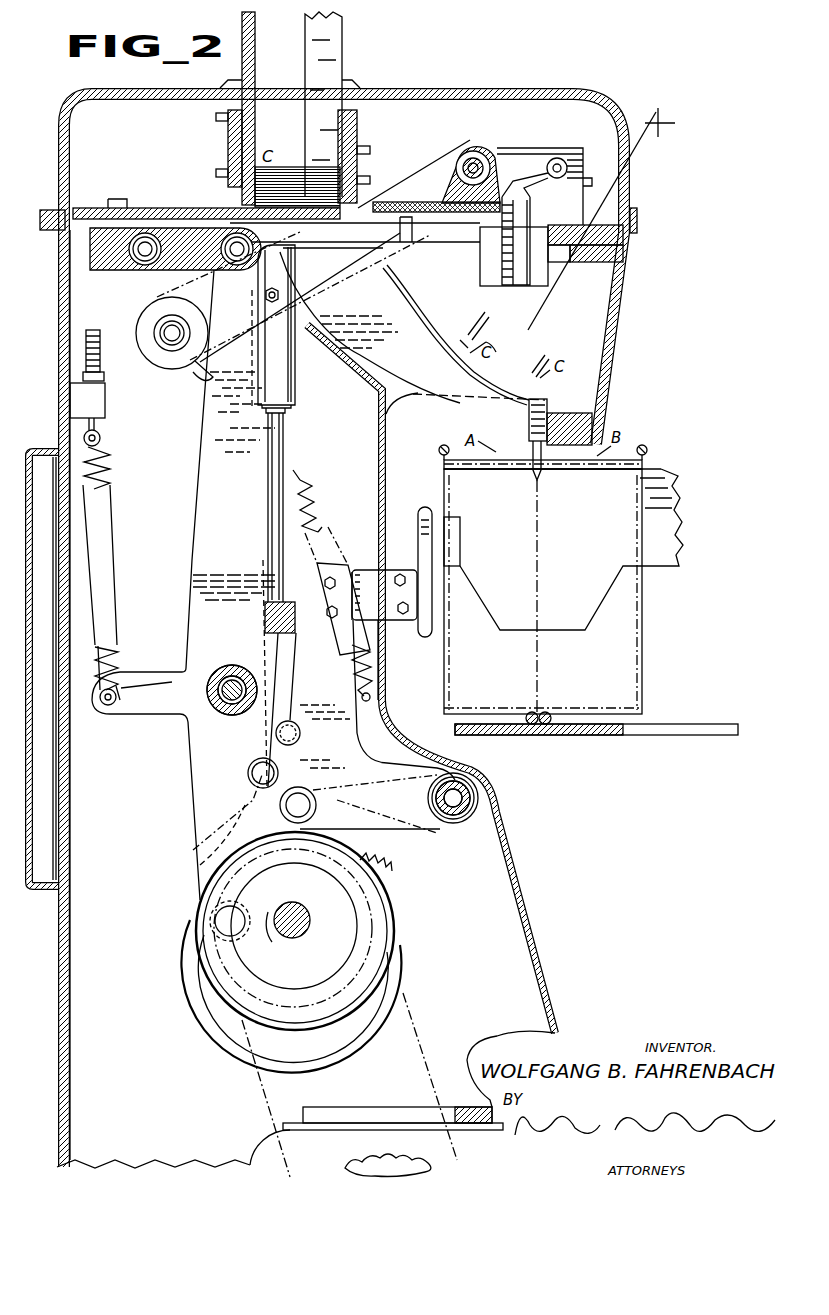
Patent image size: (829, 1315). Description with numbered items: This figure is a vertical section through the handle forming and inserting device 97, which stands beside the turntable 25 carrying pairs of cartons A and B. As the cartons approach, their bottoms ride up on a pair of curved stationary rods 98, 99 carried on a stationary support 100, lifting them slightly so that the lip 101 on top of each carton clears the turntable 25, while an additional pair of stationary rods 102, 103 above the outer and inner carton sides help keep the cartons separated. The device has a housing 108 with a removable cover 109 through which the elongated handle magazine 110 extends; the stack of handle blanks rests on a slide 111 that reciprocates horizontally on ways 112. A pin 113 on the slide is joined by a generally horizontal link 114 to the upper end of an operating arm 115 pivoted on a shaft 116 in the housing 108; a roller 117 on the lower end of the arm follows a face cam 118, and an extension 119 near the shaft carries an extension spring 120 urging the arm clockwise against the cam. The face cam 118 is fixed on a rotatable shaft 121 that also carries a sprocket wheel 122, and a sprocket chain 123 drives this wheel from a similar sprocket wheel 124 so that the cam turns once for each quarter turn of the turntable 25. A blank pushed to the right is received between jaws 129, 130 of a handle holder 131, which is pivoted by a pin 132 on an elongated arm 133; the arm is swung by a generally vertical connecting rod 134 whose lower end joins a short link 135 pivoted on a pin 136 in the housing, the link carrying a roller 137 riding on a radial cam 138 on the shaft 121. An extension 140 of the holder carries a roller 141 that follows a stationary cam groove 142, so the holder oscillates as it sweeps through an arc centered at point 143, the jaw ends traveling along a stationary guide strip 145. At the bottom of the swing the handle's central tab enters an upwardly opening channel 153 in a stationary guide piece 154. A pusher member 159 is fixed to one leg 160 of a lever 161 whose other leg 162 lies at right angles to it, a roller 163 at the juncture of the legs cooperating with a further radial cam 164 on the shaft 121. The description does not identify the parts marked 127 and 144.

The turntable 25 is at (690, 537).
The handle inserting device 97 is at (652, 96).
The stationary rod 98 is at (528, 724).
The stationary rod 99 is at (547, 725).
The stationary support 100 is at (606, 738).
The lip 101 is at (440, 462).
The stationary rod 102 is at (439, 447).
The stationary rod 103 is at (647, 447).
The housing 108 is at (545, 937).
The removable cover 109 is at (630, 188).
The handle magazine 110 is at (336, 50).
The slide 111 is at (300, 220).
The ways 112 is at (365, 218).
The pin 113 is at (147, 270).
The link 114 is at (212, 238).
The operating arm 115 is at (205, 498).
The shaft 116 is at (230, 712).
The roller 117 is at (205, 946).
The face cam 118 is at (398, 965).
The extension 119 is at (166, 663).
The extension spring 120 is at (118, 652).
The rotatable shaft 121 is at (311, 912).
The sprocket wheel 122 is at (392, 904).
The sprocket chain 123 is at (421, 1048).
The sprocket wheel 124 is at (372, 1160).
The support column 127 is at (228, 208).
The jaw 129 is at (414, 240).
The jaw 130 is at (424, 232).
The handle holder 131 is at (487, 147).
The pin 132 is at (505, 150).
The arm 133 is at (410, 195).
The connecting rod 134 is at (170, 343).
The link 135 is at (388, 745).
The pin 136 is at (462, 798).
The roller 137 is at (250, 790).
The radial cam 138 is at (195, 849).
The extension 140 is at (523, 190).
The roller 141 is at (586, 183).
The cam groove 142 is at (582, 168).
The point 143 is at (615, 219).
The bolt 144 is at (562, 158).
The guide strip 145 is at (418, 318).
The channel 153 is at (548, 408).
The guide piece 154 is at (606, 415).
The pusher member 159 is at (428, 642).
The leg 160 is at (352, 662).
The lever 161 is at (390, 832).
The leg 162 is at (430, 825).
The roller 163 is at (312, 800).
The radial cam 164 is at (365, 968).